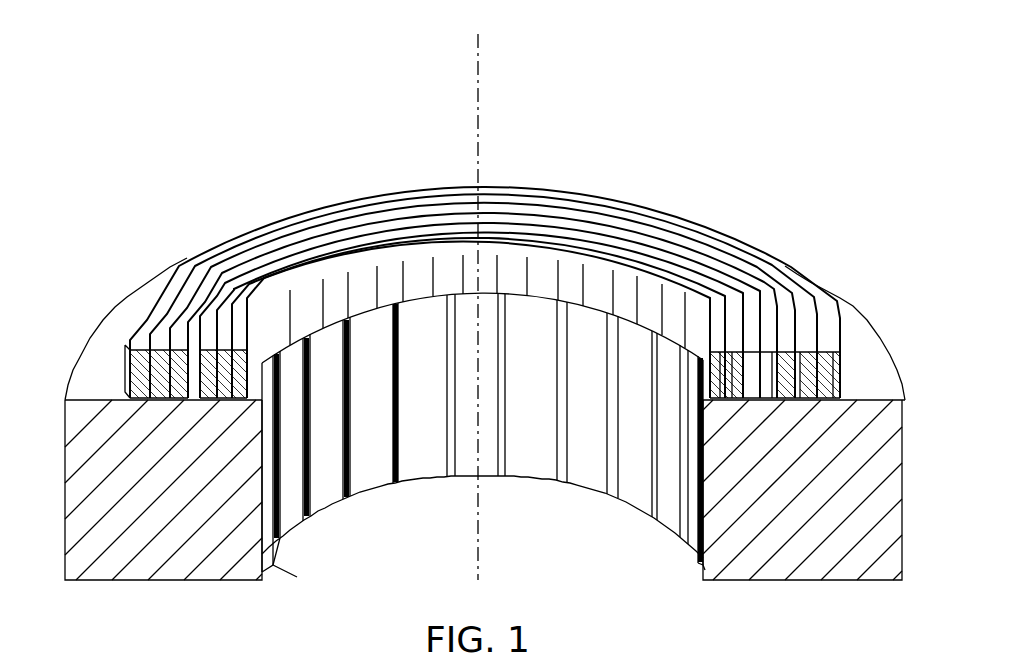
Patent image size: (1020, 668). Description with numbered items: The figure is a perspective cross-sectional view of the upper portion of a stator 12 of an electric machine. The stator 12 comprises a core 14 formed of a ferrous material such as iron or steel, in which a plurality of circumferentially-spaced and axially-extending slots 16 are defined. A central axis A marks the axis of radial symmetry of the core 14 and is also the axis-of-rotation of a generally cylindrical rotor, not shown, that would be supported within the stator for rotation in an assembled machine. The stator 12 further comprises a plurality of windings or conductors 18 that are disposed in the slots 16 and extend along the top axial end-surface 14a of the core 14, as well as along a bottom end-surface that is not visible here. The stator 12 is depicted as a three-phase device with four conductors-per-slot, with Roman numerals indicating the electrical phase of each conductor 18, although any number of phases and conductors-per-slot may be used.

The stator 12 is at (182, 161).
The core 14 is at (137, 582).
The top axial end-surface 14a is at (113, 383).
The slots 16 is at (312, 522).
The conductors 18 is at (300, 227).
The central axis A is at (476, 291).